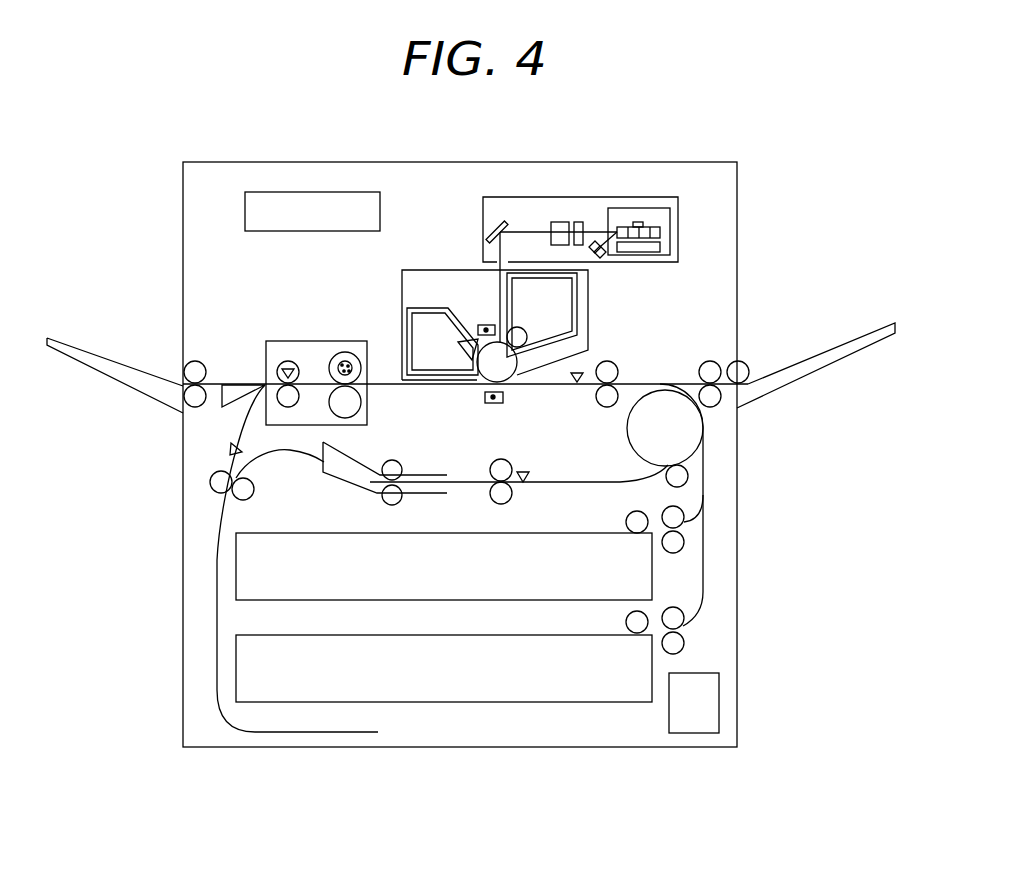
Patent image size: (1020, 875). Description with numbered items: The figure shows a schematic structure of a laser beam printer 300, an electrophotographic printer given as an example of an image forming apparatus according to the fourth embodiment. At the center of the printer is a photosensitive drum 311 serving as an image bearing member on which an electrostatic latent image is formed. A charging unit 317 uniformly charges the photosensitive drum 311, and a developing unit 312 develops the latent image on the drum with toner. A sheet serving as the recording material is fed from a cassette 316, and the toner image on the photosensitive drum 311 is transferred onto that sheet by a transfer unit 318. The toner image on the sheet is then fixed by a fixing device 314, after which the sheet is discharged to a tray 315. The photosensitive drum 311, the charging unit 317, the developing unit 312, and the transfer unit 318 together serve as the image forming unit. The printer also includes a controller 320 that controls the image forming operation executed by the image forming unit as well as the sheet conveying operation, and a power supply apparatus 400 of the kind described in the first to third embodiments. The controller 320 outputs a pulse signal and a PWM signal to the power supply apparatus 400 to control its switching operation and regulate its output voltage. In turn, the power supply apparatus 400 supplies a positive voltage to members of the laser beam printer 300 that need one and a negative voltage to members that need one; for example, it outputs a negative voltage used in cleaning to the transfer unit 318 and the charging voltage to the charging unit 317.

The laser beam printer 300 is at (648, 161).
The photosensitive drum 311 is at (517, 357).
The developing unit 312 is at (527, 331).
The fixing device 314 is at (335, 340).
The tray 315 is at (103, 362).
The cassette 316 is at (638, 580).
The charging unit 317 is at (486, 324).
The transfer unit 318 is at (503, 397).
The controller 320 is at (270, 231).
The power supply apparatus 400 is at (692, 733).